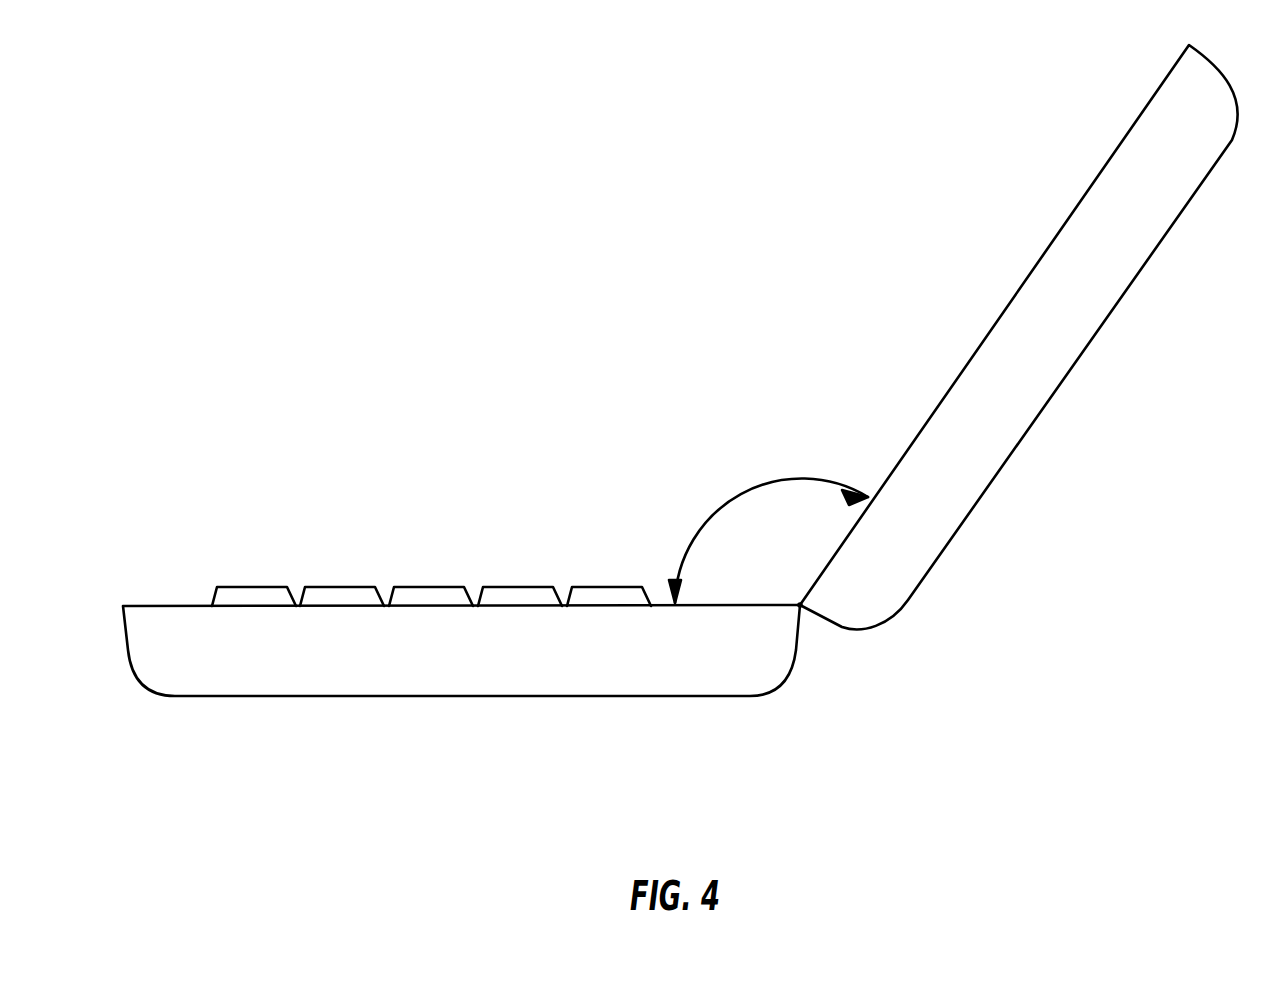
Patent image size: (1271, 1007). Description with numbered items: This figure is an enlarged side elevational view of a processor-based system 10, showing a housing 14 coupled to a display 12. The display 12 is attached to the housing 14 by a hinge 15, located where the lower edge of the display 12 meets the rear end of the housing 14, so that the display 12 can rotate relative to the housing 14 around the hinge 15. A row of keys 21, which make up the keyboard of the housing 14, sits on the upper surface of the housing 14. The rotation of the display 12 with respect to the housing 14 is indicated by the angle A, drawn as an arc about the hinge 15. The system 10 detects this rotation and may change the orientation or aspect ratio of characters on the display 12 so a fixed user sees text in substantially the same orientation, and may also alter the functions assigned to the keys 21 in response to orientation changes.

The processor-based system 10 is at (407, 540).
The display 12 is at (993, 323).
The housing 14 is at (168, 603).
The hinge 15 is at (800, 605).
The keys 21 is at (255, 587).
The angle A is at (768, 528).